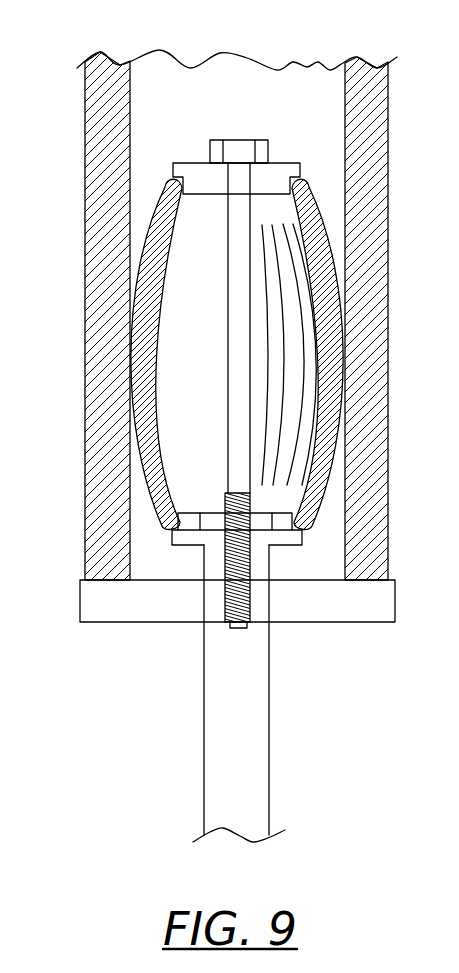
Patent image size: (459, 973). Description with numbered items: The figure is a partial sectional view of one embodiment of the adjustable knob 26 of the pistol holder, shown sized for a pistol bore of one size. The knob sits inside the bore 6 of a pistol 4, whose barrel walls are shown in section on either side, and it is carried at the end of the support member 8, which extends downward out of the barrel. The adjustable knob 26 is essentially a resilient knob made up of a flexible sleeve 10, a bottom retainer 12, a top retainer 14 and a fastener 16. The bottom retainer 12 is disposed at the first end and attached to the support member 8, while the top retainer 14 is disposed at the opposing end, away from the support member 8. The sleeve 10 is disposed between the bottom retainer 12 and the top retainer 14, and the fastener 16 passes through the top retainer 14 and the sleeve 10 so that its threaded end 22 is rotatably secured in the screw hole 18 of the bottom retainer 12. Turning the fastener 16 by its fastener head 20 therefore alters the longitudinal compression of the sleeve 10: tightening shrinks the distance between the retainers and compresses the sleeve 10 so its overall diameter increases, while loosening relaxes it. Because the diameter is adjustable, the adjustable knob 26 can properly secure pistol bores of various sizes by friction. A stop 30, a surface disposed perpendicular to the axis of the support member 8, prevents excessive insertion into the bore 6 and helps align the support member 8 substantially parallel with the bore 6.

The pistol 4 is at (84, 497).
The bore 6 is at (340, 507).
The support member 8 is at (204, 807).
The flexible sleeve 10 is at (170, 529).
The bottom retainer 12 is at (287, 547).
The top retainer 14 is at (280, 162).
The fastener 16 is at (228, 313).
The screw hole 18 is at (225, 610).
The fastener head 20 is at (235, 140).
The threaded end 22 is at (258, 496).
The adjustable knob 26 is at (253, 90).
The stop 30 is at (395, 597).